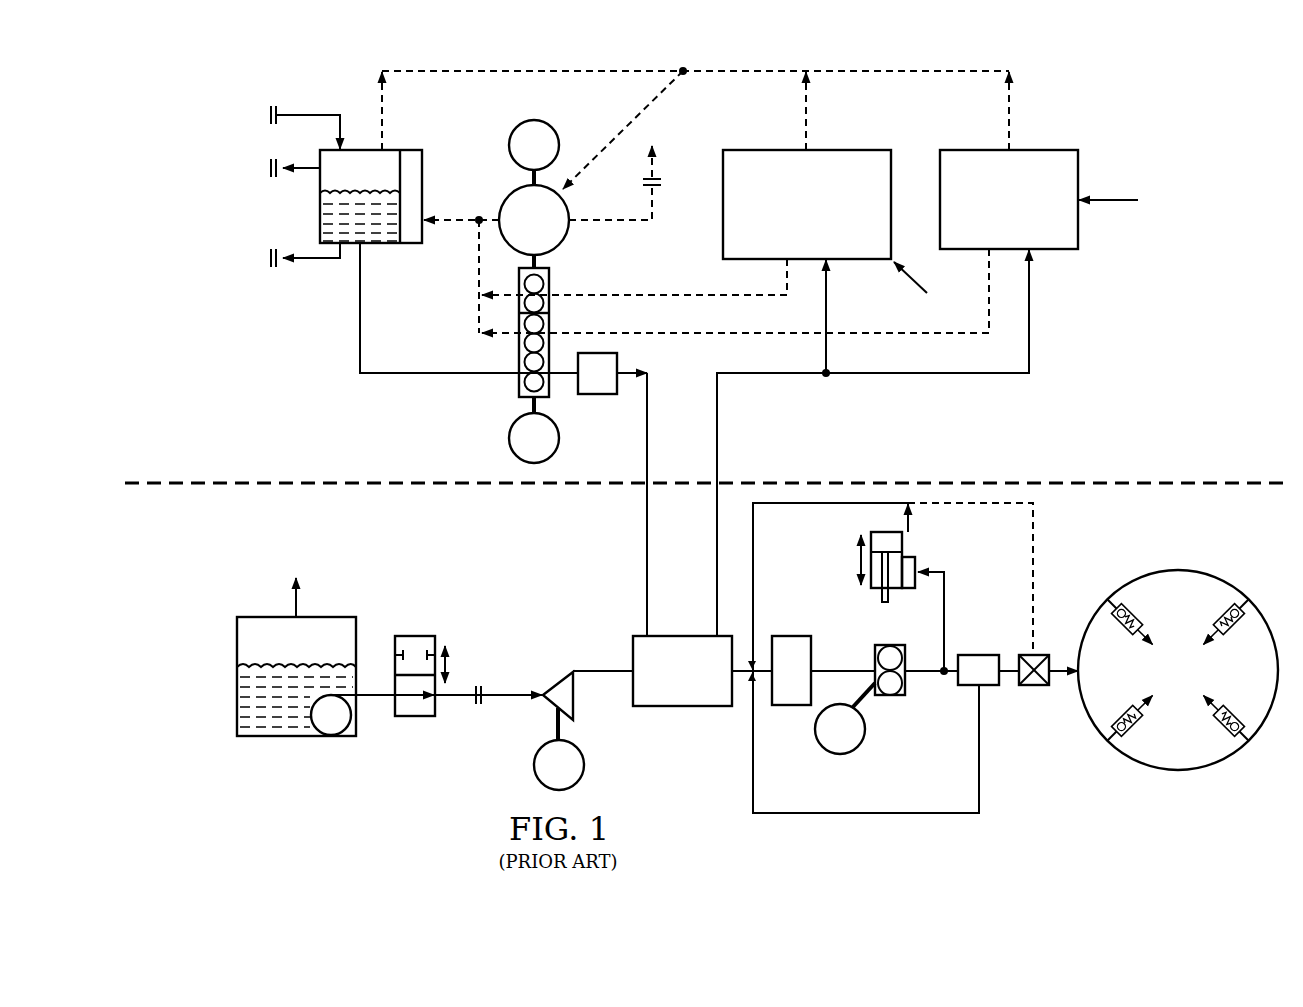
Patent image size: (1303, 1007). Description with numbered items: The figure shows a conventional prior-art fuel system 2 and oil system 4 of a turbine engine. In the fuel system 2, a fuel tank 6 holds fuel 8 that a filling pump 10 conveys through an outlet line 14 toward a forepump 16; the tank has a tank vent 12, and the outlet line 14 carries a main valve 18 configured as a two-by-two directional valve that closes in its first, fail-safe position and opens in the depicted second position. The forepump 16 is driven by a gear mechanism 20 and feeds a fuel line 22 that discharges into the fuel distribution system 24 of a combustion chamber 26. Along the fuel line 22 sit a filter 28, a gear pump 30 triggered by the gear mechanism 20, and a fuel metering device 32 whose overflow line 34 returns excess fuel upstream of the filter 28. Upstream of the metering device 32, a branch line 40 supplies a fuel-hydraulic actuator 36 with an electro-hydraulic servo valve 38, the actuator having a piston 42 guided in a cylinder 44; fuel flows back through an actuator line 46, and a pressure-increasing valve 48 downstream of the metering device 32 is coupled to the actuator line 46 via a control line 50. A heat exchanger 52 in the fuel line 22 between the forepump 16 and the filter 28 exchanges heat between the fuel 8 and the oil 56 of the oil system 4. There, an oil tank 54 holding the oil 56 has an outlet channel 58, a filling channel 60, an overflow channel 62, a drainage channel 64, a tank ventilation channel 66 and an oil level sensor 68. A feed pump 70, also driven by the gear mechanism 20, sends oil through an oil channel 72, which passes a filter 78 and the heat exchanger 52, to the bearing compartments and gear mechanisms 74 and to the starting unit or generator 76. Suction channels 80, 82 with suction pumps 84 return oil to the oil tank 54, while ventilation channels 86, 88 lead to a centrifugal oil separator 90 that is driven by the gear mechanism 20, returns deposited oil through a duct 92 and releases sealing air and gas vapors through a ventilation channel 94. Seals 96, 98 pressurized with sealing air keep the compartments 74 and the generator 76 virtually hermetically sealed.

The fuel system 2 is at (185, 560).
The oil system 4 is at (183, 155).
The fuel tank 6 is at (237, 640).
The fuel 8 is at (237, 703).
The filling pump 10 is at (331, 736).
The tank vent 12 is at (296, 600).
The outlet line 14 is at (503, 697).
The forepump 16 is at (556, 682).
The main valve 18 is at (413, 716).
The gear mechanism 20 is at (512, 126).
The fuel line 22 is at (604, 670).
The fuel distribution system 24 is at (1178, 695).
The combustion chamber 26 is at (1177, 669).
The filter 28 is at (792, 635).
The gear pump 30 is at (892, 696).
The fuel metering device 32 is at (986, 654).
The overflow line 34 is at (980, 752).
The fuel-hydraulic actuator 36 is at (871, 540).
The electro-hydraulic servo valve 38 is at (908, 590).
The branch line 40 is at (945, 596).
The piston 42 is at (902, 549).
The cylinder 44 is at (873, 590).
The actuator line 46 is at (754, 572).
The pressure-increasing valve 48 is at (1036, 686).
The control line 50 is at (1034, 562).
The heat exchanger 52 is at (684, 707).
The oil tank 54 is at (320, 160).
The oil 56 is at (320, 203).
The outlet channel 58 is at (360, 346).
The filling channel 60 is at (308, 115).
The overflow channel 62 is at (300, 170).
The drainage channel 64 is at (315, 260).
The tank ventilation channel 66 is at (382, 98).
The oil level sensor 68 is at (410, 150).
The feed pump 70 is at (518, 388).
The oil channel 72 is at (646, 560).
The bearing compartments and gear mechanisms 74 is at (807, 204).
The starting unit or generator 76 is at (1009, 199).
The check valve 78 is at (600, 395).
The suction channel 80 is at (606, 294).
The suction channel 82 is at (941, 332).
The suction pump 84 is at (518, 345).
The ventilation channel 86 is at (807, 112).
The ventilation channel 88 is at (1010, 112).
The centrifugal oil separator 90 is at (503, 194).
The duct 92 is at (455, 219).
The ventilation channel 94 is at (630, 222).
The seal 96 is at (910, 281).
The seal 98 is at (1113, 200).